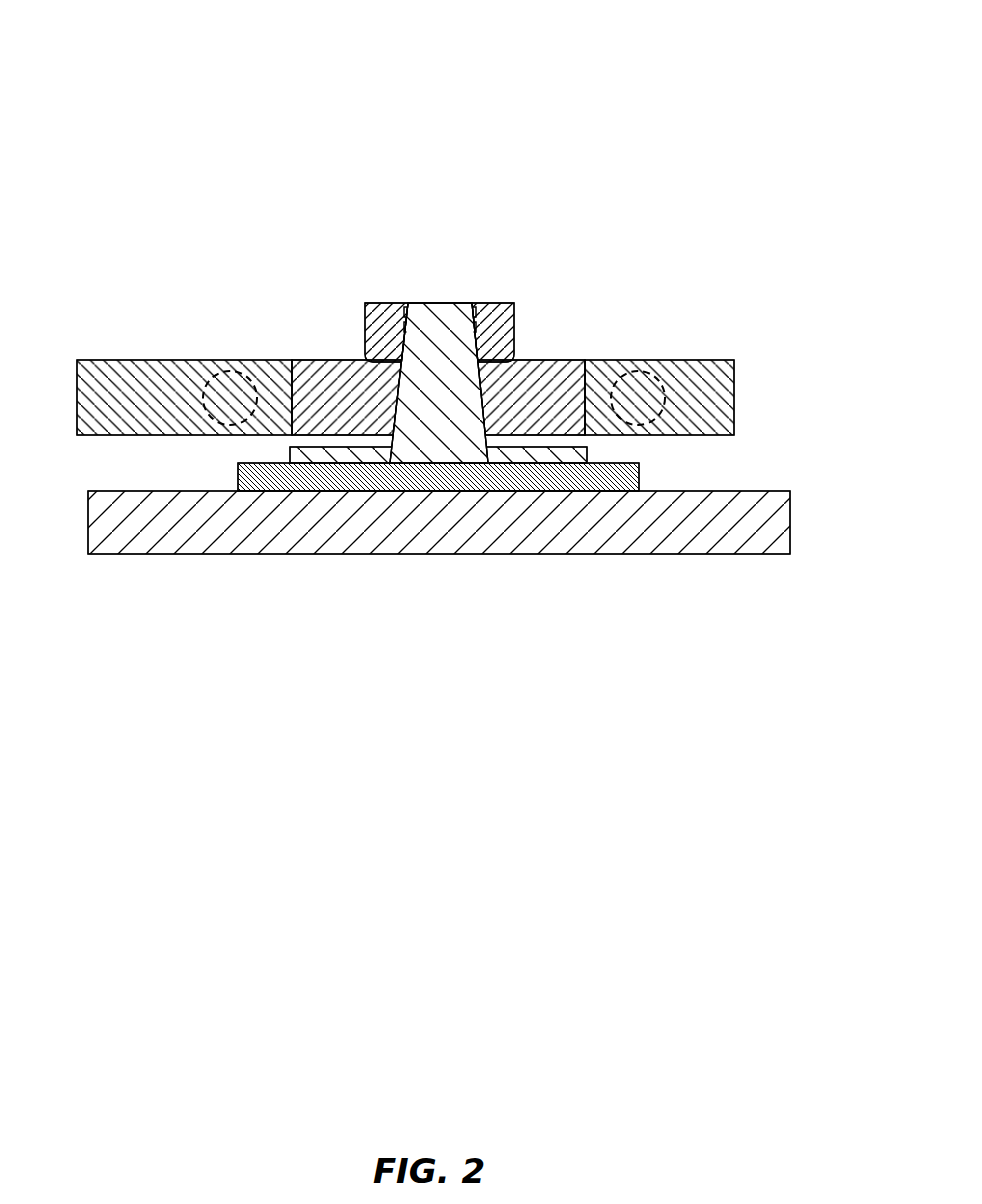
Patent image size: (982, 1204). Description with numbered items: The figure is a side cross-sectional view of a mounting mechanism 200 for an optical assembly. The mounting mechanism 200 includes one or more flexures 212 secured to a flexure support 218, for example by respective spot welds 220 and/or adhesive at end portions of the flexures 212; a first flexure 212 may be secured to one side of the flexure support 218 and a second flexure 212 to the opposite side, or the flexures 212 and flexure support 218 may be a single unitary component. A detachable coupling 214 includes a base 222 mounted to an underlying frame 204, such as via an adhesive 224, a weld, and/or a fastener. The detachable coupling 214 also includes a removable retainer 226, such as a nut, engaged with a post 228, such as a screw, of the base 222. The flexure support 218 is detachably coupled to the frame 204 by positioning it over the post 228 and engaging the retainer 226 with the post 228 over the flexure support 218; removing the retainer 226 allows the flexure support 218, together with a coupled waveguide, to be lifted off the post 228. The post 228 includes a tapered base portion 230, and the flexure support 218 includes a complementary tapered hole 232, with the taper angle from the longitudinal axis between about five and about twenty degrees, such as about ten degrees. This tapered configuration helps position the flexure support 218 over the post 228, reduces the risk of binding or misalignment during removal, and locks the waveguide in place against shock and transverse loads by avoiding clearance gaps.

The mounting mechanism 200 is at (98, 78).
The frame 204 is at (783, 527).
The flexures 212 is at (88, 391).
The detachable coupling 214 is at (439, 331).
The flexure support 218 is at (332, 372).
The spot welds 220 is at (229, 382).
The base 222 is at (298, 449).
The adhesive 224 is at (632, 483).
The retainer 226 is at (382, 240).
The post 228 is at (437, 310).
The tapered base portion 230 is at (488, 392).
The tapered hole 232 is at (408, 430).